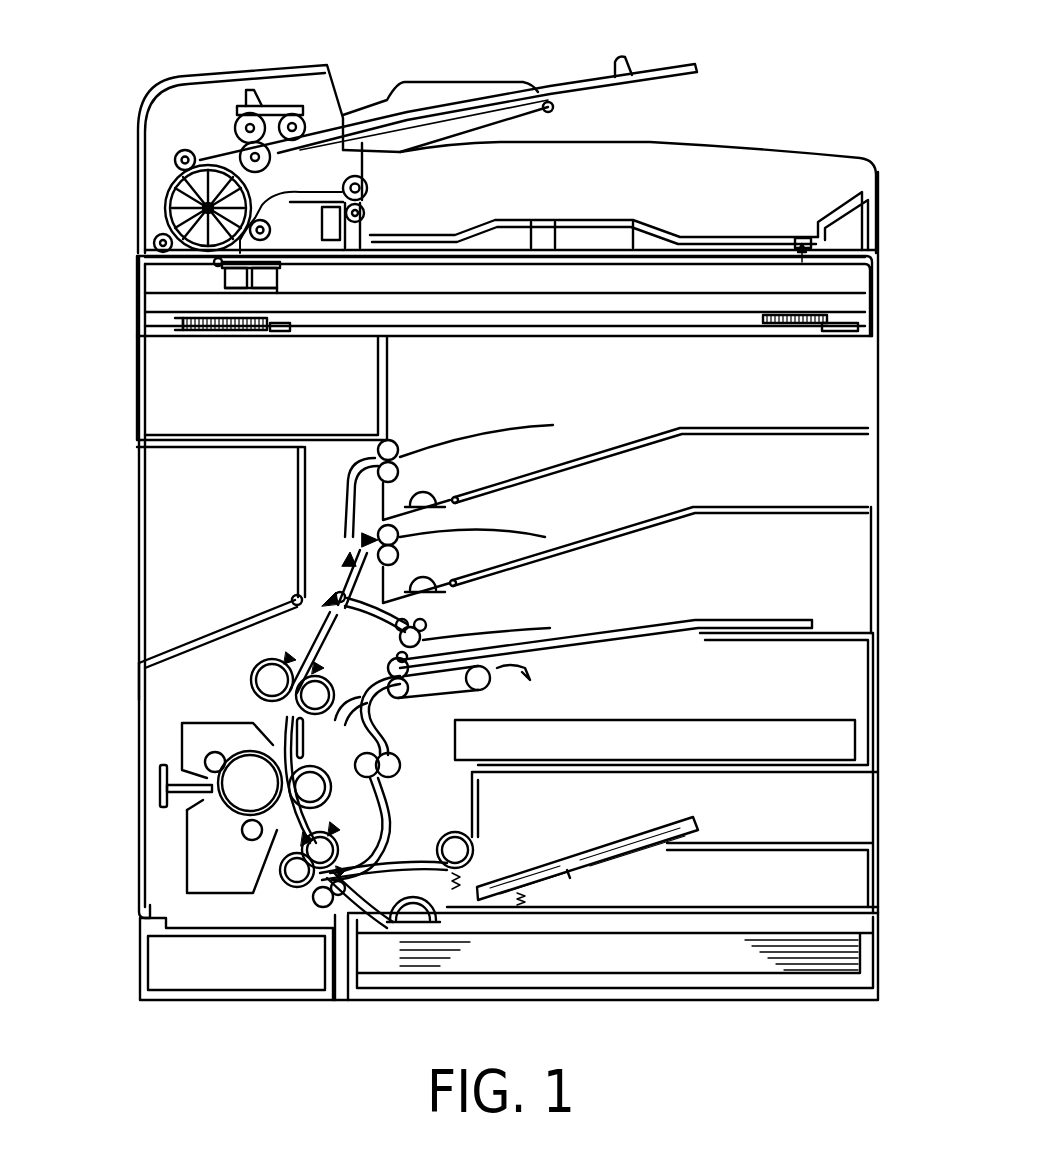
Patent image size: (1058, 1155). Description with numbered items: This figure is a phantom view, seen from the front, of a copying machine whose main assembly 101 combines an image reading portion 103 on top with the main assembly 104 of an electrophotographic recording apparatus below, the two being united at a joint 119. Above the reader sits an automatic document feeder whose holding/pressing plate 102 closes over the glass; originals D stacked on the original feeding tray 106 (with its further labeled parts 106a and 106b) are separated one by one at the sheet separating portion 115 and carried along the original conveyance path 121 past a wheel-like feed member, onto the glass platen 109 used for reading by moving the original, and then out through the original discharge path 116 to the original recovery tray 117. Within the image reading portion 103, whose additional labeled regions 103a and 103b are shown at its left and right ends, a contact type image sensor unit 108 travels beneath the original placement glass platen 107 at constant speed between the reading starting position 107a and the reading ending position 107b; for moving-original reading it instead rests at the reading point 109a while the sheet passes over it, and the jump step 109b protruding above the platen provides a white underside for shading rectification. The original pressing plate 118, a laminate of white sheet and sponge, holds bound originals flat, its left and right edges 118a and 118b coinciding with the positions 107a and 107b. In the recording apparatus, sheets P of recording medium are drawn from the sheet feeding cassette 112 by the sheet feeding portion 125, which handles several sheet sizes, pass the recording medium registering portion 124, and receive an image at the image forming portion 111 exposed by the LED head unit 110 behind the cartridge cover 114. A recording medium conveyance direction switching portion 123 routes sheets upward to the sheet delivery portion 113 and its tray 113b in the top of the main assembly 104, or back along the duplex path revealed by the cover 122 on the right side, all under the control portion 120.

The main assembly of the copying machine 101 is at (863, 395).
The holding/pressing plate of the ADF 102 is at (710, 160).
The image reading portion 103 is at (143, 278).
The left partition of reading unit 103a is at (440, 322).
The right lamp unit of reading unit 103b is at (830, 330).
The main assembly of the recording apparatus 104 is at (760, 523).
The original feeding tray 106 is at (670, 60).
The document tray cover 106a is at (437, 95).
The document stopper 106b is at (618, 57).
The original D is at (560, 80).
The original placement glass platen 107 is at (573, 262).
The reading starting position 107a is at (267, 258).
The reading ending position 107b is at (802, 262).
The image sensor unit 108 is at (267, 278).
The original placement glass platen for moving-original reading 109 is at (207, 260).
The reading point 109a is at (217, 263).
The jump step 109b is at (220, 277).
The LED head unit 110 is at (160, 780).
The image forming portion 111 is at (165, 837).
The sheet feeding cassette 112 is at (465, 982).
The sheet delivery portion 113 is at (673, 485).
The upper discharge tray 113b is at (623, 440).
The cartridge cover 114 is at (138, 712).
The sheet separating portion of the ADF 115 is at (202, 103).
The original discharge path 116 is at (315, 183).
The original recovery tray 117 is at (372, 228).
The original pressing plate 118 is at (700, 240).
The left edge of the original pressing plate 118a is at (233, 277).
The right edge of the original pressing plate 118b is at (802, 238).
The joint 119 is at (263, 598).
The control portion 120 is at (548, 747).
The original conveyance path 121 is at (167, 203).
The cover for exposing the duplex conveyance path 122 is at (878, 575).
The recording medium conveyance direction switching portion 123 is at (323, 570).
The recording medium registering portion 124 is at (277, 867).
The sheet feeding portion 125 is at (495, 852).
The sheet of recording medium P is at (667, 817).